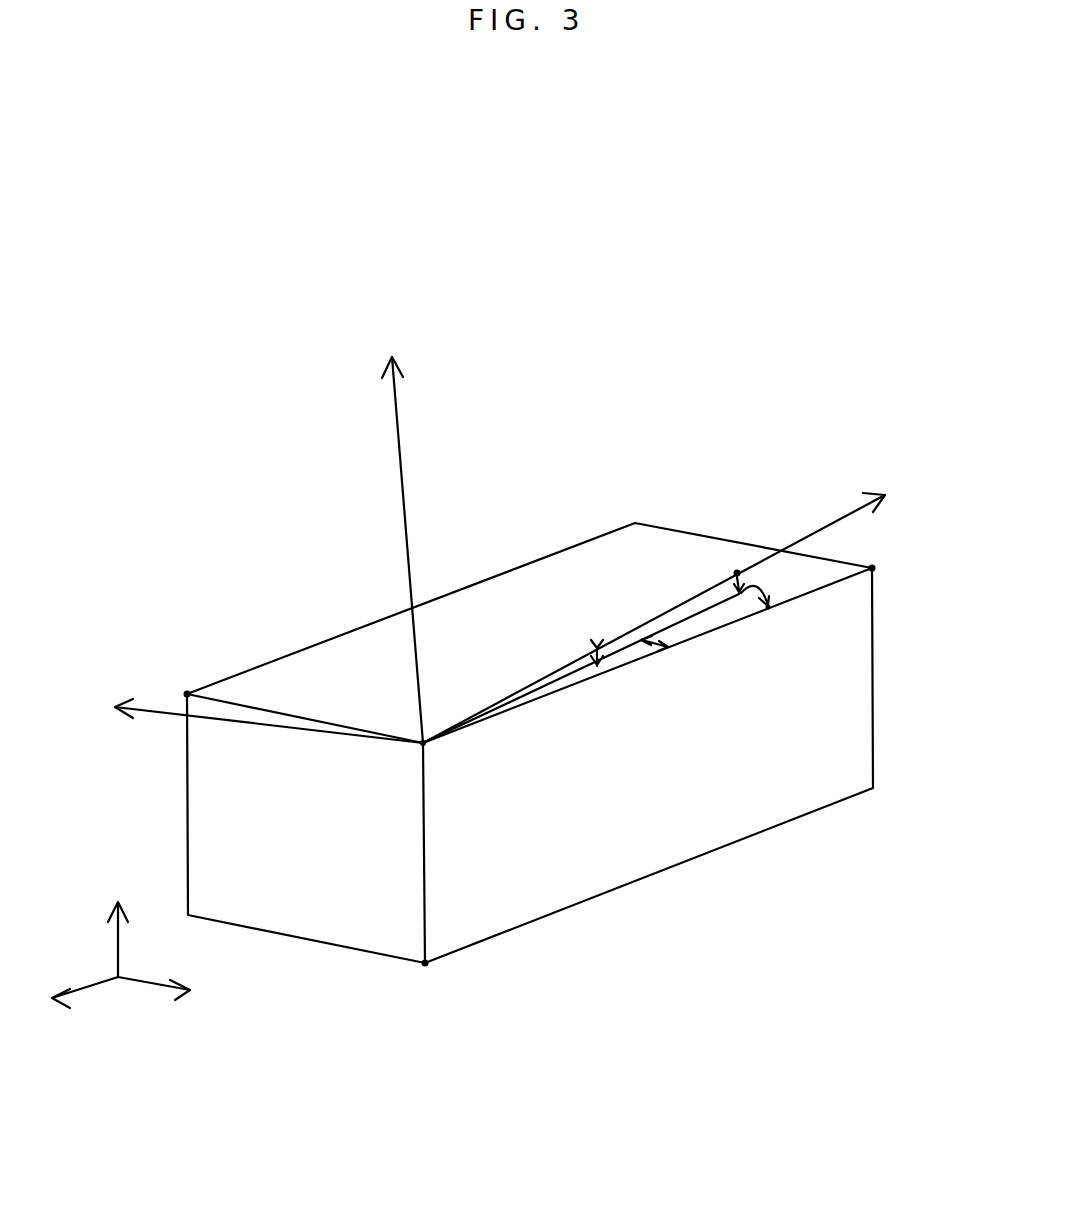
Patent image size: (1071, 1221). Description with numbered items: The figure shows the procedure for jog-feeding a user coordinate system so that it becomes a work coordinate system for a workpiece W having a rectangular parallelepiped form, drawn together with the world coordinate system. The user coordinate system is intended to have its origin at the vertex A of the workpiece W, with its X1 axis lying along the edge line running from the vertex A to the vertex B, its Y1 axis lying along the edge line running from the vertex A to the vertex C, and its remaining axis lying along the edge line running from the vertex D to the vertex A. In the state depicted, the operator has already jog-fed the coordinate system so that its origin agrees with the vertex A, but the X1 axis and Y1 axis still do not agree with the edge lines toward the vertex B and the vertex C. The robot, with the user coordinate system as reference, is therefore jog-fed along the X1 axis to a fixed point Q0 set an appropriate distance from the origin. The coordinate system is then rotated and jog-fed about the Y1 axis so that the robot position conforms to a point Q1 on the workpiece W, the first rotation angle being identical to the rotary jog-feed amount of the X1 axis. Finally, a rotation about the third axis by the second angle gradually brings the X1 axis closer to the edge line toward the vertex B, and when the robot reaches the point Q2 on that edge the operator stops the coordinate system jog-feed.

The workpiece W is at (240, 813).
The X1 axis X1 is at (678, 598).
The Y1 axis Y1 is at (250, 713).
The vertex A is at (420, 747).
The vertex B is at (886, 562).
The vertex C is at (175, 682).
The vertex D is at (434, 986).
The fixed point Q0 is at (717, 564).
The point Q1 is at (744, 592).
The point Q2 is at (769, 611).